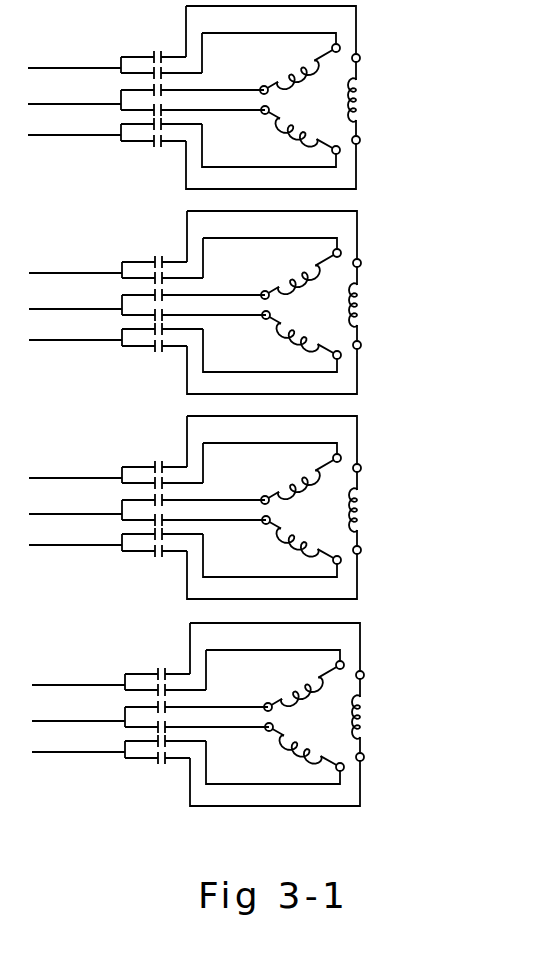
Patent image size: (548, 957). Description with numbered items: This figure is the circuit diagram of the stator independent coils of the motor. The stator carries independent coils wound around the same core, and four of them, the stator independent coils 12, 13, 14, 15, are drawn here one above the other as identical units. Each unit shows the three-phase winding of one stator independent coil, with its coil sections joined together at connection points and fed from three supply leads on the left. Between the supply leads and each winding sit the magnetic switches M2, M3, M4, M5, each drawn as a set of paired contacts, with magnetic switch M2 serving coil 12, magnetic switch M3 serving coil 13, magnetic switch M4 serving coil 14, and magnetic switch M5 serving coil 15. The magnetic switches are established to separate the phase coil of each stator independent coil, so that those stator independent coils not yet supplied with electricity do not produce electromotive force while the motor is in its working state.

The stator independent coil 12 is at (365, 94).
The stator independent coil 13 is at (307, 302).
The stator independent coil 14 is at (312, 507).
The stator independent coil 15 is at (312, 714).
The magnetic switch M2 is at (146, 85).
The magnetic switch M3 is at (147, 290).
The magnetic switch M4 is at (147, 495).
The magnetic switch M5 is at (150, 702).